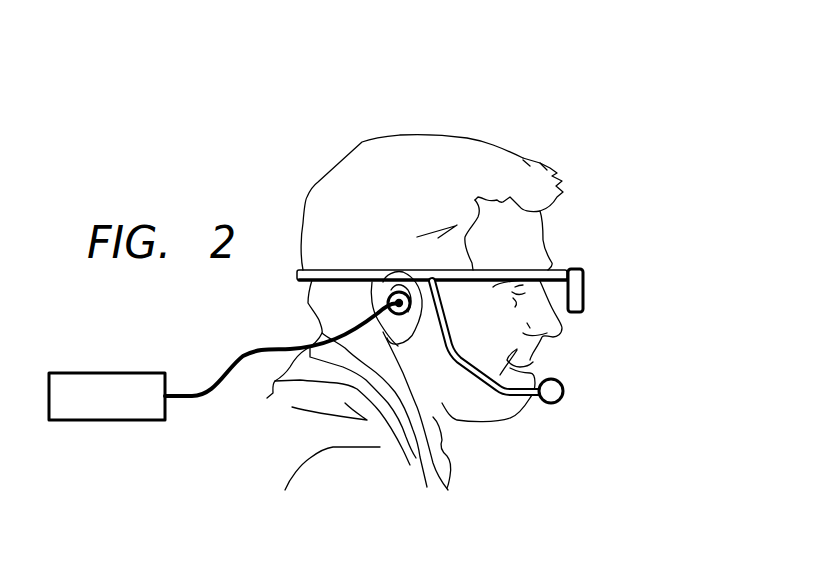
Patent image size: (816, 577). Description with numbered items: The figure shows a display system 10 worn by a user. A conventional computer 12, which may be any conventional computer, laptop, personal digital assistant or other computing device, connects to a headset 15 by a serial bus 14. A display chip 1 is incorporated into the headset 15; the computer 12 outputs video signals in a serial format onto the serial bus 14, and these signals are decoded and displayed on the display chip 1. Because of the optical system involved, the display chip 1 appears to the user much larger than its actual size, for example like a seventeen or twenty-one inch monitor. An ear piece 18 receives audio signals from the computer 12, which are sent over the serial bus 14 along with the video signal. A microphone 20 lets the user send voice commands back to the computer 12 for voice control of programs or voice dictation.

The display system 10 is at (626, 197).
The display chip 1 is at (583, 292).
The computer 12 is at (108, 421).
The serial bus 14 is at (243, 357).
The headset 15 is at (490, 268).
The ear piece 18 is at (370, 270).
The microphone 20 is at (563, 392).